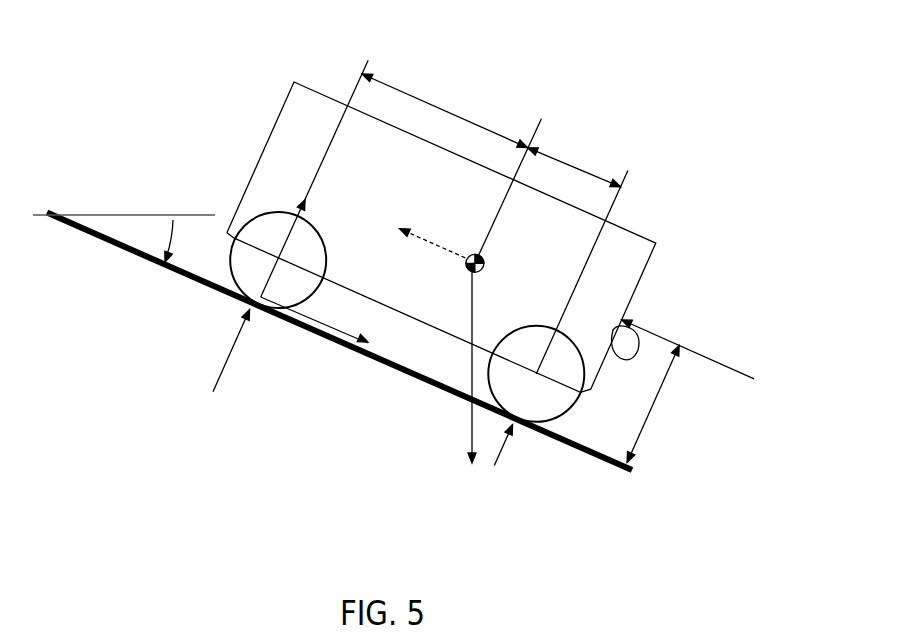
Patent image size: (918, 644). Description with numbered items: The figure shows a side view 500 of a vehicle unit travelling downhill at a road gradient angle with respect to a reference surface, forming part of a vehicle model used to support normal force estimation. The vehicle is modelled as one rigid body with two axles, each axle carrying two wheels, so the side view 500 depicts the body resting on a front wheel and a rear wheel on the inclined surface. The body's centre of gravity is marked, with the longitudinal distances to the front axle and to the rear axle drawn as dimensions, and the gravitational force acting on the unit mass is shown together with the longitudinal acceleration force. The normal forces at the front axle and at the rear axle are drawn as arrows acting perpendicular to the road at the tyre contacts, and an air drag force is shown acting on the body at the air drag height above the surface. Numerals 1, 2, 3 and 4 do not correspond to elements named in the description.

The side view 500 is at (392, 256).
The front wheel 1 is at (558, 269).
The front axle normal force Fz1+Fz2 2 is at (530, 465).
The rear wheel with body-fixed x/z axes 3 is at (305, 202).
The rear axle normal force Fz3+Fz4 4 is at (217, 366).